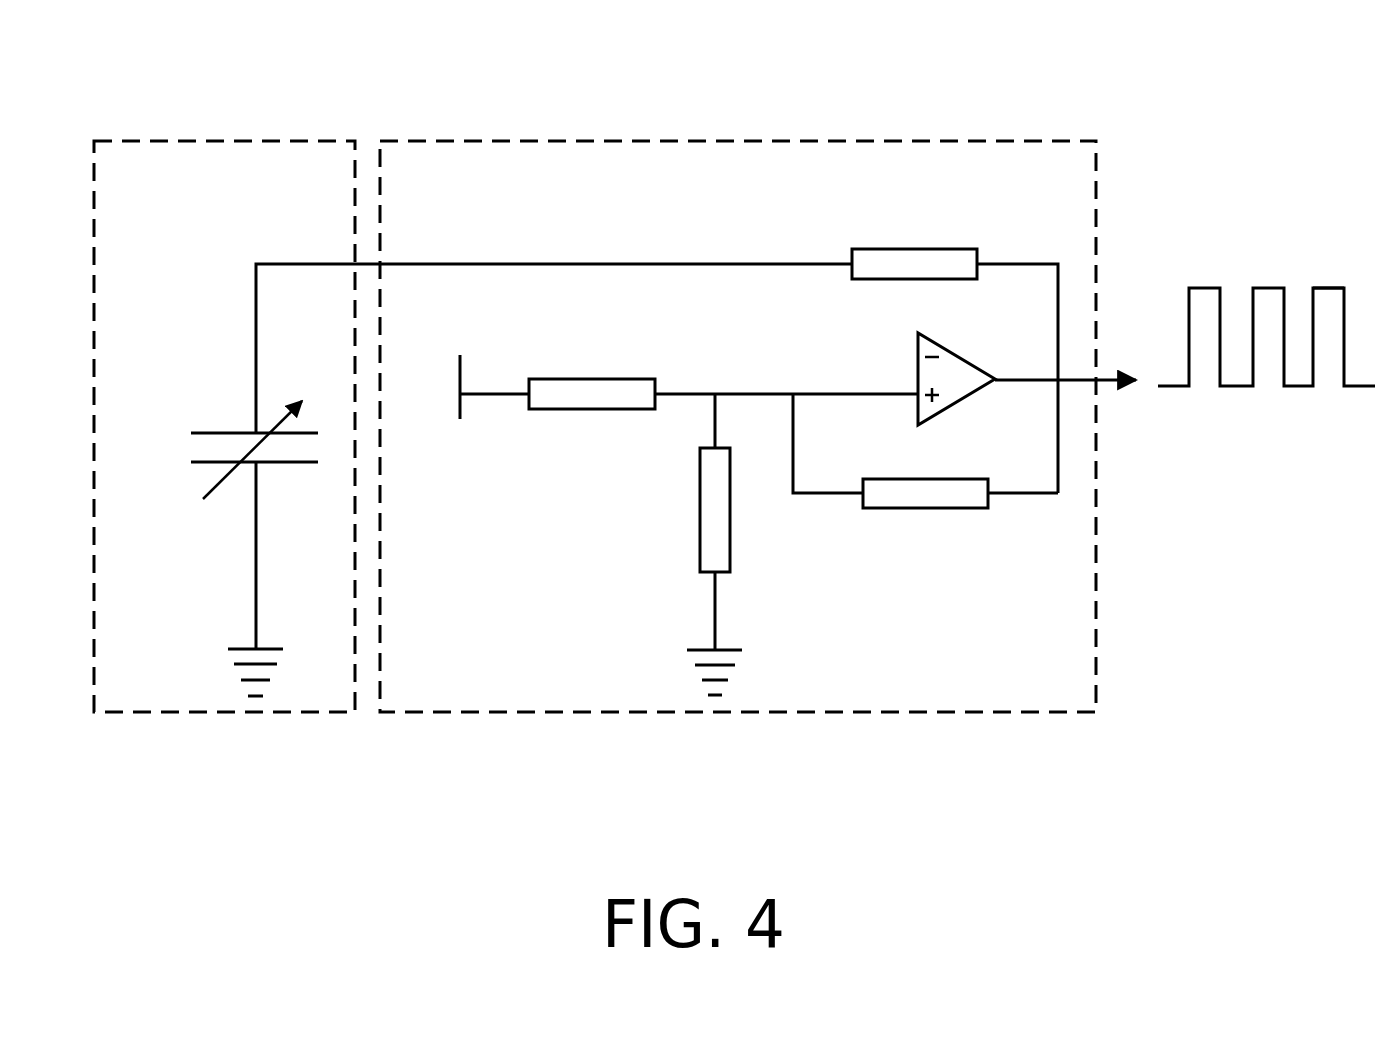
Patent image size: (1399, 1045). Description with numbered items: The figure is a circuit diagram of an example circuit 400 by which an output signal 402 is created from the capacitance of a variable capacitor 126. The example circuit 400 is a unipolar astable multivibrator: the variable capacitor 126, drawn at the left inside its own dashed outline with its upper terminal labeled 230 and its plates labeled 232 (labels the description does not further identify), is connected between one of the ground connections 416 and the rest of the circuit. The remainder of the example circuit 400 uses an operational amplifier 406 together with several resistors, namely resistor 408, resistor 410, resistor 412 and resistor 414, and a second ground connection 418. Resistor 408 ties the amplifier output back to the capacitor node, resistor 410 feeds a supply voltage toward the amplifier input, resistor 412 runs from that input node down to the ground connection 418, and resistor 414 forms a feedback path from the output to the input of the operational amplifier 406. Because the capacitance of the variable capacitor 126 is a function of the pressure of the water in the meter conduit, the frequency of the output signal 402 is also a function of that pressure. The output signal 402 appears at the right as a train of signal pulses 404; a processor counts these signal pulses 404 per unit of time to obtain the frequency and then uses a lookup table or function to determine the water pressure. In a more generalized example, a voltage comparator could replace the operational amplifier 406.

The variable capacitor 126 is at (222, 108).
The example circuit 400 is at (577, 100).
The sensor electrode terminal 230 is at (290, 262).
The variable capacitor 232 is at (255, 503).
The ground connection 416 is at (228, 645).
The ground connection 418 is at (687, 657).
The resistor 410 is at (570, 409).
The resistor 412 is at (730, 513).
The resistor 408 is at (953, 249).
The resistor 414 is at (962, 508).
The operational amplifier 406 is at (916, 372).
The output signal 402 is at (1236, 236).
The signal pulses 404 is at (1325, 288).